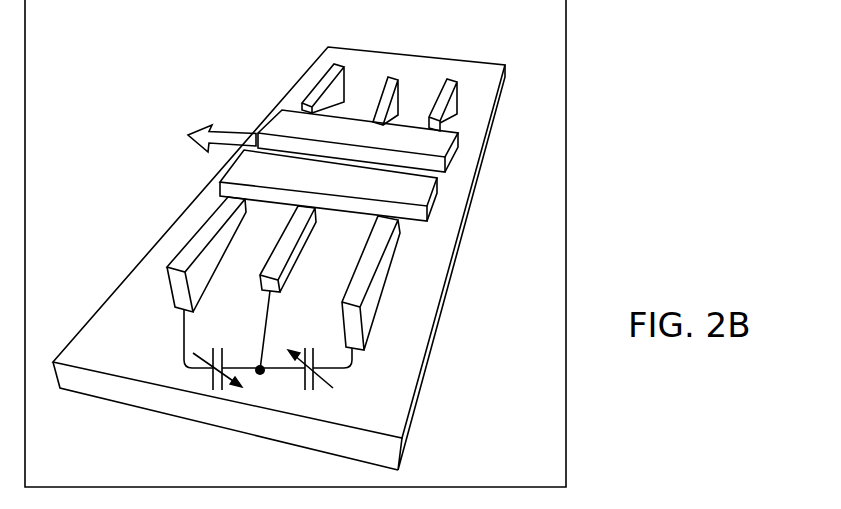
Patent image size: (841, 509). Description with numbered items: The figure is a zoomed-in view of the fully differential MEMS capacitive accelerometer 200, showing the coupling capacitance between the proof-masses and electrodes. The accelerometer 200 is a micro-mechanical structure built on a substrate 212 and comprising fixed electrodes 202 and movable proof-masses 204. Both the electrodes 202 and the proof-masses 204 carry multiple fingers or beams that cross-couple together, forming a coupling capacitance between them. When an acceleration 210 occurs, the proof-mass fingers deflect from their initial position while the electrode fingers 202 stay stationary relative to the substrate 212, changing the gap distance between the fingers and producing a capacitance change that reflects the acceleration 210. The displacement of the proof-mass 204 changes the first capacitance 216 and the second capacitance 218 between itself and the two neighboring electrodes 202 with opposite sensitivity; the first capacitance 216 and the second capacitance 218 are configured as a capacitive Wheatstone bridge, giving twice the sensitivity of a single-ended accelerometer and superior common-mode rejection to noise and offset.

The fully differential MEMS capacitive accelerometer 200 is at (566, 33).
The fixed electrodes 202 is at (388, 250).
The movable proof-masses 204 is at (441, 149).
The acceleration 210 is at (227, 136).
The substrate 212 is at (424, 366).
The capacitance C1 216 is at (300, 378).
The capacitance C2 218 is at (212, 372).